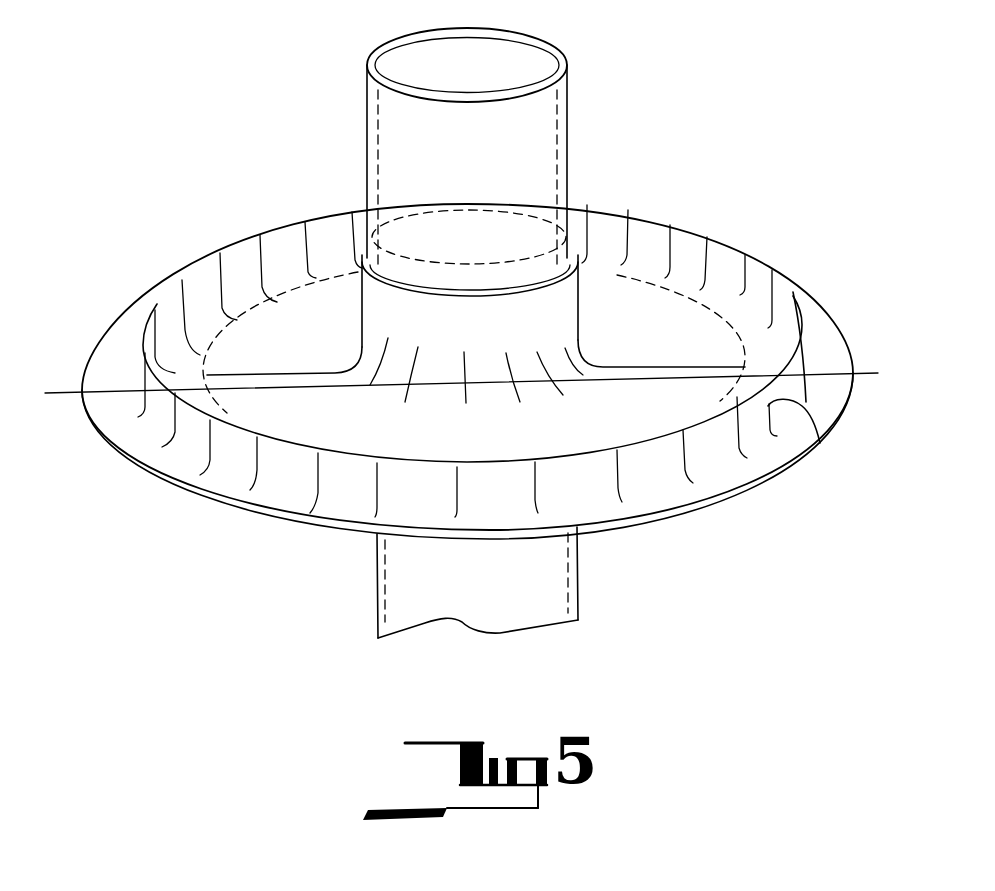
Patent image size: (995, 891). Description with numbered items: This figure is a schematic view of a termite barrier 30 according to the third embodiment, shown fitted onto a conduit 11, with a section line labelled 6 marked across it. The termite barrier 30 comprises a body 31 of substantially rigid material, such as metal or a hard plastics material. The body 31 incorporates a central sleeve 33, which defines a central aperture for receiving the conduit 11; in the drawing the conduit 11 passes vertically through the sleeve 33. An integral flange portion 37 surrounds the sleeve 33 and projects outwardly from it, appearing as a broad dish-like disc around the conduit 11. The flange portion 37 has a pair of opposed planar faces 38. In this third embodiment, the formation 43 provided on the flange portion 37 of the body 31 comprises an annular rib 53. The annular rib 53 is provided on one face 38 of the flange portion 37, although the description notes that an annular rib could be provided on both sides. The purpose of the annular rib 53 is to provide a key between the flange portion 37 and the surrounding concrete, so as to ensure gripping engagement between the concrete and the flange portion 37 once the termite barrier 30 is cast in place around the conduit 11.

The section line 6- 6 is at (45, 393).
The conduit 11 is at (568, 85).
The termite barrier 30 is at (227, 236).
The body 31 is at (130, 325).
The central sleeve 33 is at (572, 295).
The flange portion 37 is at (728, 494).
The face 38 is at (810, 317).
The formation 43 is at (812, 346).
The annular rib 53 is at (819, 442).